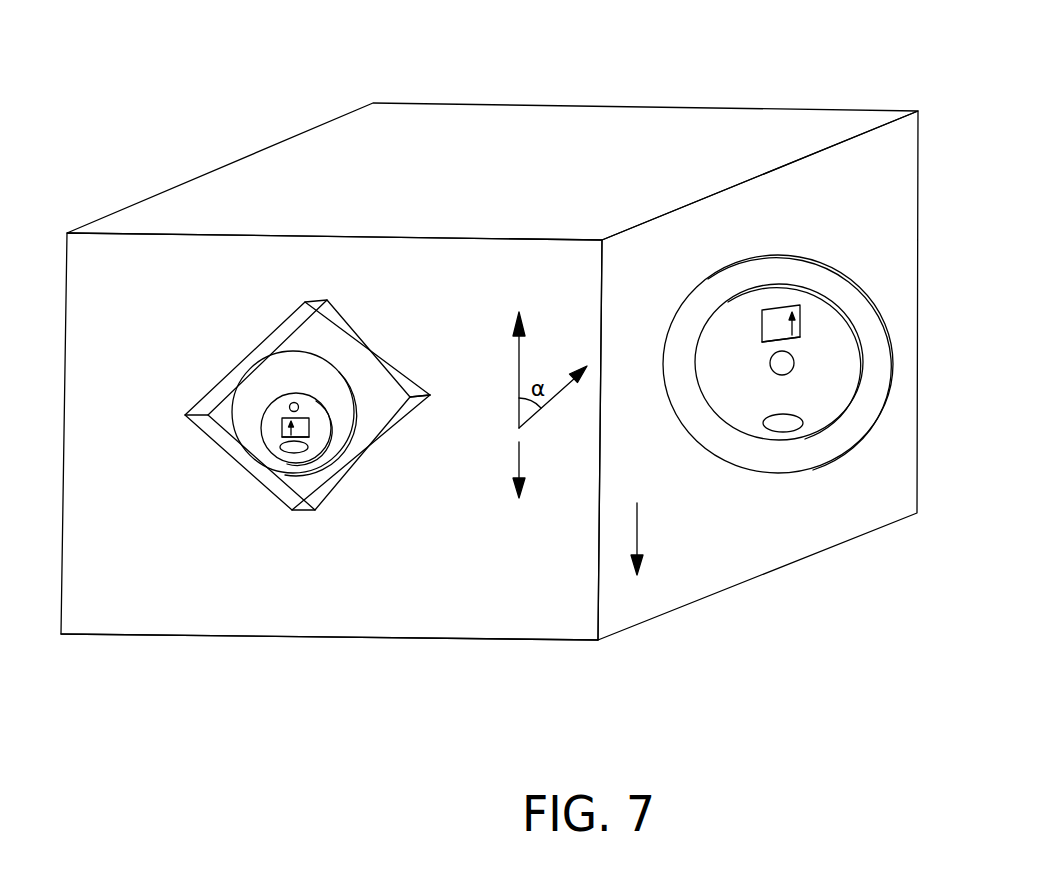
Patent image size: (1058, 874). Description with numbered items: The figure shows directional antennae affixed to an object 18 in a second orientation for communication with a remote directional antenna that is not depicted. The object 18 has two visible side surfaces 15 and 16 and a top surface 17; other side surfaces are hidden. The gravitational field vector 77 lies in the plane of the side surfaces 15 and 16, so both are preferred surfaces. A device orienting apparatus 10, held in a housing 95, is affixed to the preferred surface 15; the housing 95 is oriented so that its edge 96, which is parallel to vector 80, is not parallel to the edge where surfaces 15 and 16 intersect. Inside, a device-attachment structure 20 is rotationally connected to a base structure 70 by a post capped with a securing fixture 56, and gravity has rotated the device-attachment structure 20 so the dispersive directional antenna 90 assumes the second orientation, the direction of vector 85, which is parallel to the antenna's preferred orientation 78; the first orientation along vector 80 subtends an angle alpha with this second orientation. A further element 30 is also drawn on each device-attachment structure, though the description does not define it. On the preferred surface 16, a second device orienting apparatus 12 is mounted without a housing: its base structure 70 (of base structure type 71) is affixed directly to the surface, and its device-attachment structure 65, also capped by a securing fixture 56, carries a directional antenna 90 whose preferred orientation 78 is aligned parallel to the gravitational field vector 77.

The device orienting apparatus 10 is at (507, 419).
The device orienting apparatus 12 is at (778, 374).
The side surface 15 is at (530, 598).
The side surface 16 is at (885, 483).
The top surface 17 is at (817, 122).
The object 18 is at (317, 640).
The device-attachment structure 20 is at (322, 414).
The oval window 30 is at (293, 453).
The securing fixture 56 is at (293, 403).
The device-attachment structure 65 is at (793, 302).
The base structure 70 is at (280, 363).
The base structure 71 is at (773, 262).
The gravitational field vector 77 is at (515, 458).
The preferred orientation 78 is at (308, 436).
The vector 80 is at (548, 402).
The vector 85 is at (522, 367).
The directional antenna 90 is at (281, 428).
The housing 95 is at (370, 338).
The edge 96 is at (421, 406).